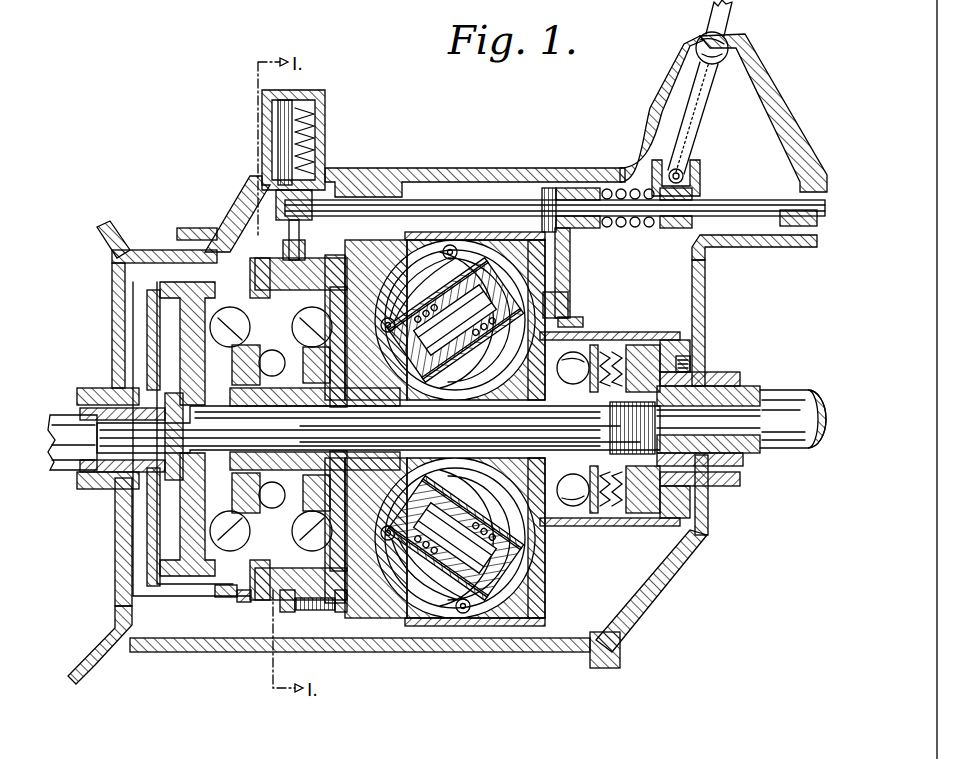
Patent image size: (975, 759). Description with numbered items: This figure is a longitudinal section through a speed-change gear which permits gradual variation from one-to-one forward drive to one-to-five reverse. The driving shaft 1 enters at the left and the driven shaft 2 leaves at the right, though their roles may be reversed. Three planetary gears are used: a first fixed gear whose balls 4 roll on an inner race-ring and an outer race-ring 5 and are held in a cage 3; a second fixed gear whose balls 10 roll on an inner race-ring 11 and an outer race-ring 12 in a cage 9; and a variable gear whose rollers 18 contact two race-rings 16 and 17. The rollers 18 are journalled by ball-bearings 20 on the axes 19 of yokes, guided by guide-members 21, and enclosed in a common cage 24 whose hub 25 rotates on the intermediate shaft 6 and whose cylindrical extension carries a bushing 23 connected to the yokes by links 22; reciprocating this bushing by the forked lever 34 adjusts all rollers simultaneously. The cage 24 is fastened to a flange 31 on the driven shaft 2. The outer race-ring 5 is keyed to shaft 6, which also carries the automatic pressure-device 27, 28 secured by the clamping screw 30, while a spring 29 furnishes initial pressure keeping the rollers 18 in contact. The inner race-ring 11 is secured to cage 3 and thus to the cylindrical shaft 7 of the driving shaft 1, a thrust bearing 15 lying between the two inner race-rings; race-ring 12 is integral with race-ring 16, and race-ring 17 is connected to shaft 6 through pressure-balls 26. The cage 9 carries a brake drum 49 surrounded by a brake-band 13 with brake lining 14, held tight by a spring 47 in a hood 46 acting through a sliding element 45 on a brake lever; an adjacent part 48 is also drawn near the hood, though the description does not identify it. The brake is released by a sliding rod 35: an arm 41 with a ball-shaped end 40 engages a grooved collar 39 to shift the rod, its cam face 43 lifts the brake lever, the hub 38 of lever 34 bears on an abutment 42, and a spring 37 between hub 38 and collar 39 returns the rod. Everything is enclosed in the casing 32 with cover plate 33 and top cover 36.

The driving shaft 1 is at (68, 470).
The driven shaft 2 is at (800, 416).
The cage 3 is at (258, 600).
The balls 4 is at (190, 562).
The outer race-ring 5 is at (190, 536).
The intermediate shaft 6 is at (165, 480).
The cylindrical shaft 7 is at (190, 598).
The cage 9 is at (252, 462).
The balls 10 is at (298, 612).
The inner race-ring 11 is at (242, 602).
The outer race-ring 12 is at (384, 602).
The brake-band 13 is at (338, 240).
The brake lining 14 is at (317, 610).
The thrust bearing 15 is at (226, 597).
The race-ring 16 is at (398, 580).
The race-ring 17 is at (513, 600).
The rollers 18 is at (498, 600).
The axes 19 is at (428, 606).
The ball-bearings 20 is at (452, 580).
The guide-members 21 is at (390, 604).
The links 22 is at (450, 245).
The bushing 23 is at (480, 240).
The cage 24 is at (500, 232).
The hub 25 is at (435, 398).
The pressure-balls 26 is at (597, 333).
The automatic pressure-device 27 is at (638, 345).
The automatic pressure-device 28 is at (690, 362).
The spring 29 is at (680, 345).
The clamping screw 30 is at (712, 377).
The flange 31 is at (740, 390).
The casing 32 is at (112, 262).
The cover plate 33 is at (696, 564).
The forked lever 34 is at (572, 306).
The sliding rod 35 is at (734, 200).
The top cover 36 is at (232, 212).
The spring 37 is at (634, 226).
The hub 38 is at (574, 190).
The grooved collar 39 is at (694, 172).
The ball-shaped end 40 is at (687, 147).
The arm 41 is at (727, 42).
The abutment 42 is at (550, 190).
The cam face 43 is at (285, 208).
The sliding element 45 is at (318, 120).
The hood 46 is at (305, 88).
The spring 47 is at (318, 102).
The nut 48 is at (302, 180).
The brake drum 49 is at (342, 602).